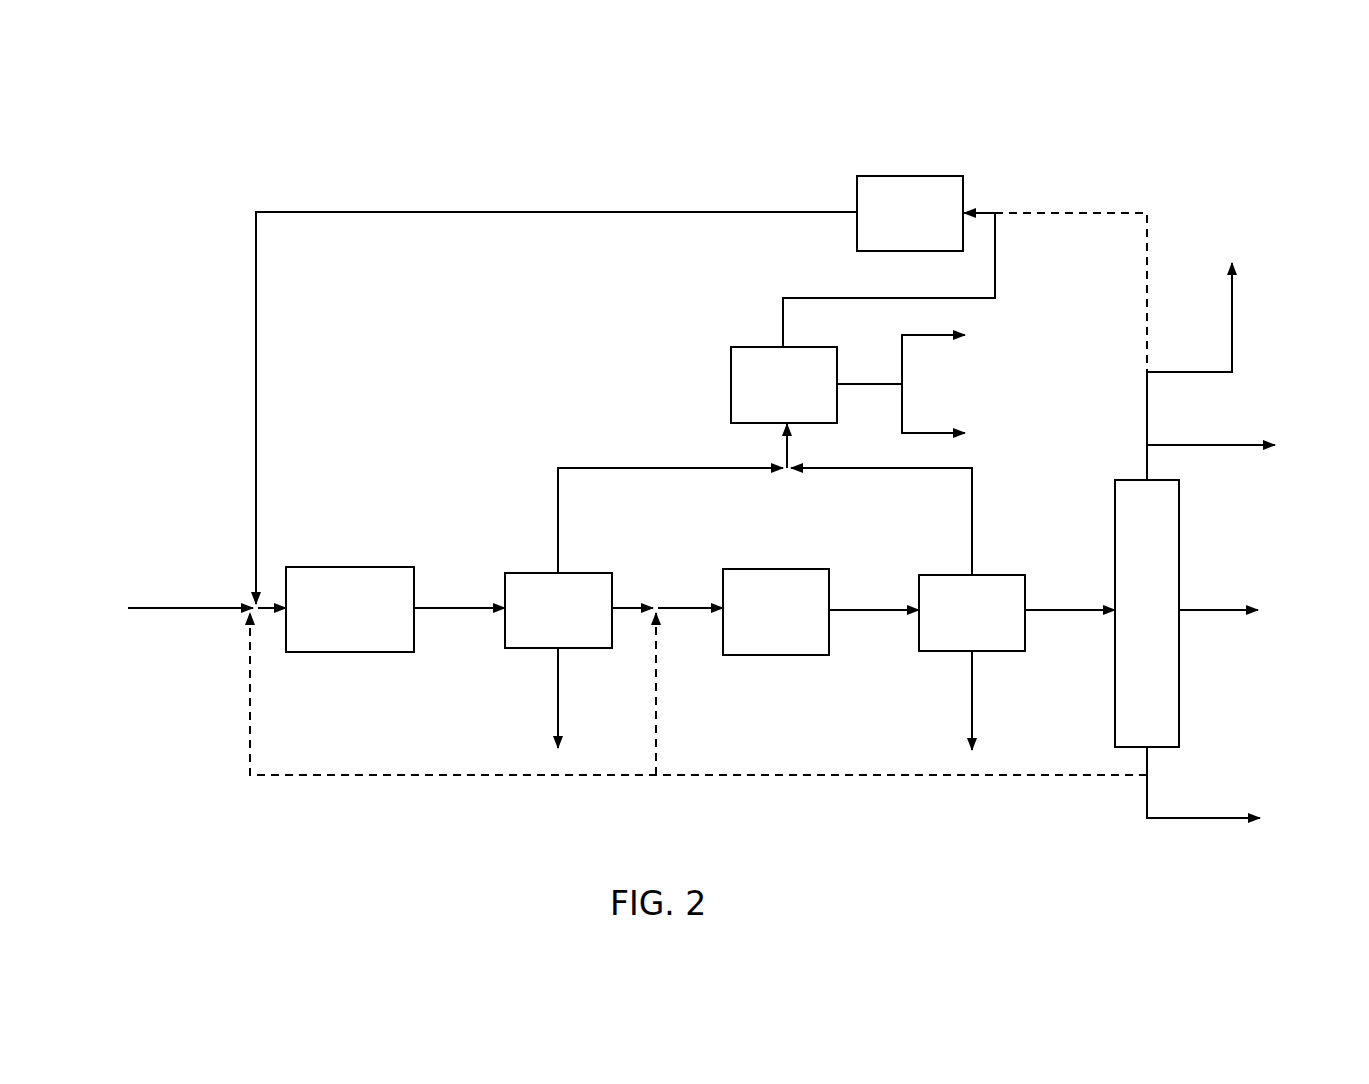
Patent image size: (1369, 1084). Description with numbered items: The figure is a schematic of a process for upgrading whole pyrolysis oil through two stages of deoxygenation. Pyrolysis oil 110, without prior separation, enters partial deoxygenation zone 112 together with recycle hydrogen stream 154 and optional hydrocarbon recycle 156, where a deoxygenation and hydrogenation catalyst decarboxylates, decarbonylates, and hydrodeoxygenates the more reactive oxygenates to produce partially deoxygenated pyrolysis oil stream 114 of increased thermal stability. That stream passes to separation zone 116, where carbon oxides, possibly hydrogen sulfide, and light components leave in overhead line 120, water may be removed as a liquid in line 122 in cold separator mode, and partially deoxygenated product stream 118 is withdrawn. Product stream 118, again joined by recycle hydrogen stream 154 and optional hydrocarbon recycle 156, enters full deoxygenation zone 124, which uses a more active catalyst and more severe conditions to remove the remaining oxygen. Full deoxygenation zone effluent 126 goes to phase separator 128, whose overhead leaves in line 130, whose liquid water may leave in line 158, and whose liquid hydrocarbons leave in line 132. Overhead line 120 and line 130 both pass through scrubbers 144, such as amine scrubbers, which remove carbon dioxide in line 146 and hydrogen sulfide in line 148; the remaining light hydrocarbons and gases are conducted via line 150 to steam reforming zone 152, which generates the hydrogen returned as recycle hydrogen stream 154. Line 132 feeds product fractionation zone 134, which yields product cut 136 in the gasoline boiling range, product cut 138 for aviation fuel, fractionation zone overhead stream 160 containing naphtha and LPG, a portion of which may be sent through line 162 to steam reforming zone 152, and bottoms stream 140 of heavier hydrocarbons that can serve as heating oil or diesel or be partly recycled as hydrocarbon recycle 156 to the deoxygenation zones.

The pyrolysis oil 110 is at (192, 606).
The partial deoxygenation zone 112 is at (350, 609).
The partially deoxygenated pyrolysis oil stream 114 is at (472, 605).
The separation zone 116 is at (558, 610).
The partially deoxygenated product stream 118 is at (698, 605).
The overhead line 120 is at (558, 523).
The line 122 is at (560, 708).
The full deoxygenation zone 124 is at (776, 612).
The full deoxygenation zone effluent 126 is at (889, 606).
The phase separator 128 is at (972, 613).
The line 130 is at (973, 521).
The line 132 is at (1052, 594).
The product fractionation zone 134 is at (1147, 613).
The product cut 136 is at (1252, 442).
The product cut 138 is at (1238, 607).
The bottoms stream 140 is at (1210, 817).
The scrubbers 144 is at (784, 385).
The line 146 is at (905, 431).
The line 148 is at (902, 342).
The line 150 is at (849, 284).
The steam reforming zone 152 is at (910, 213).
The recycle hydrogen stream 154 is at (704, 200).
The hydrocarbon recycle 156 is at (780, 777).
The line 158 is at (973, 709).
The fractionation zone overhead stream 160 is at (1234, 325).
The line 162 is at (1148, 278).